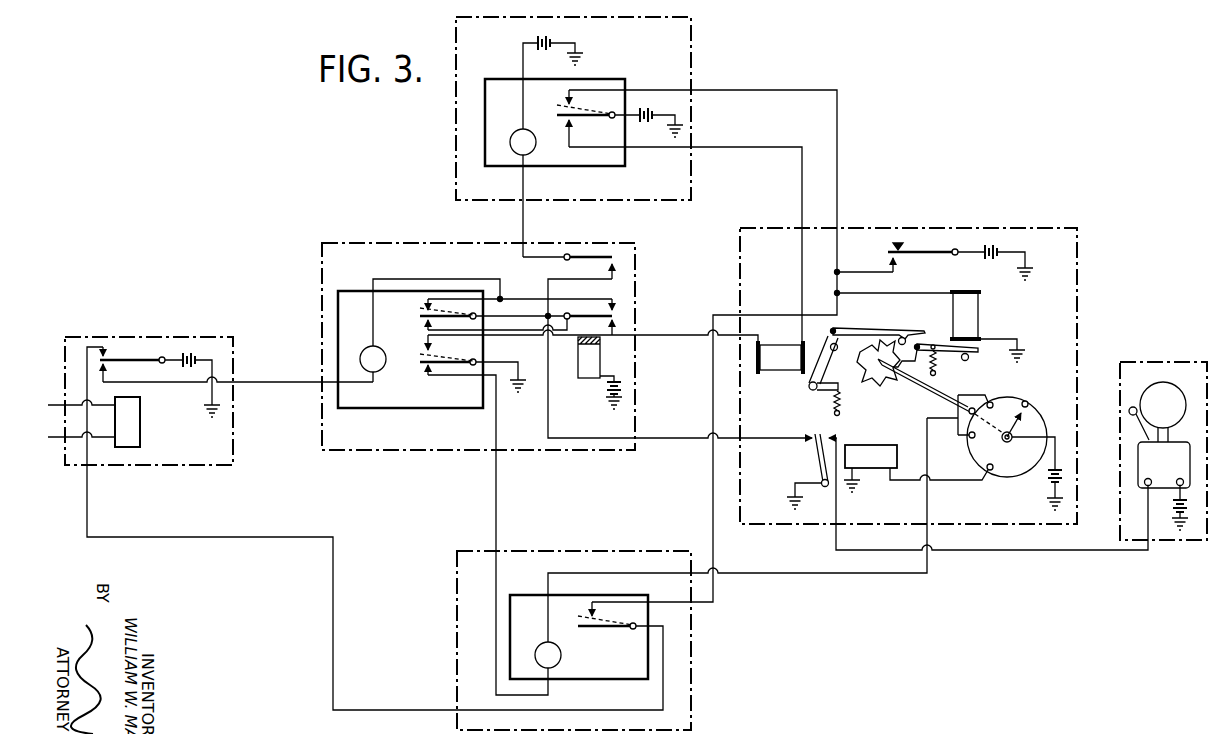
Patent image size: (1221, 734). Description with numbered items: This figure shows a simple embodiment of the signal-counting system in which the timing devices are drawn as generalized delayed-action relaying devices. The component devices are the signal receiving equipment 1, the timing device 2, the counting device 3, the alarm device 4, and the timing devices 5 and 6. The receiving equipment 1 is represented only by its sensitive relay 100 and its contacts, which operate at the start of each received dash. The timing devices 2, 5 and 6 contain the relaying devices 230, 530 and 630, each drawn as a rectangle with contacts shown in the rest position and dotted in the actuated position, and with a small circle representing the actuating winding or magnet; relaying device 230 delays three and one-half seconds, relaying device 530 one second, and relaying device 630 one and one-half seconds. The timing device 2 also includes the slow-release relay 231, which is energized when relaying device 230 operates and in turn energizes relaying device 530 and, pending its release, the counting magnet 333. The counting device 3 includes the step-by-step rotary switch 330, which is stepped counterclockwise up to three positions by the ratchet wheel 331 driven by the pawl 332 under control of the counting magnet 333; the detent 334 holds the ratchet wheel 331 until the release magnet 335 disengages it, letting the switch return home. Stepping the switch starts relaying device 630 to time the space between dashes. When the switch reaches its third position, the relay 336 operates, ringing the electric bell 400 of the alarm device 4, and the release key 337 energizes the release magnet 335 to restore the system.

The signal receiving equipment 1 is at (133, 337).
The timing device 2 is at (428, 243).
The counting device 3 is at (880, 228).
The alarm device 4 is at (1161, 362).
The timing device 5 is at (456, 137).
The timing device 6 is at (600, 551).
The relay 100 is at (137, 433).
The relaying device 230 is at (412, 408).
The relay 231 is at (591, 375).
The step-by-step rotary switch 330 is at (1028, 421).
The ratchet wheel 331 is at (878, 378).
The pawl 332 is at (867, 331).
The counting magnet 333 is at (781, 362).
The detent 334 is at (947, 354).
The release magnet 335 is at (972, 312).
The relay 336 is at (874, 468).
The release key 337 is at (943, 249).
The electric bell 400 is at (1165, 395).
The relaying device 530 is at (577, 167).
The relaying device 630 is at (517, 600).